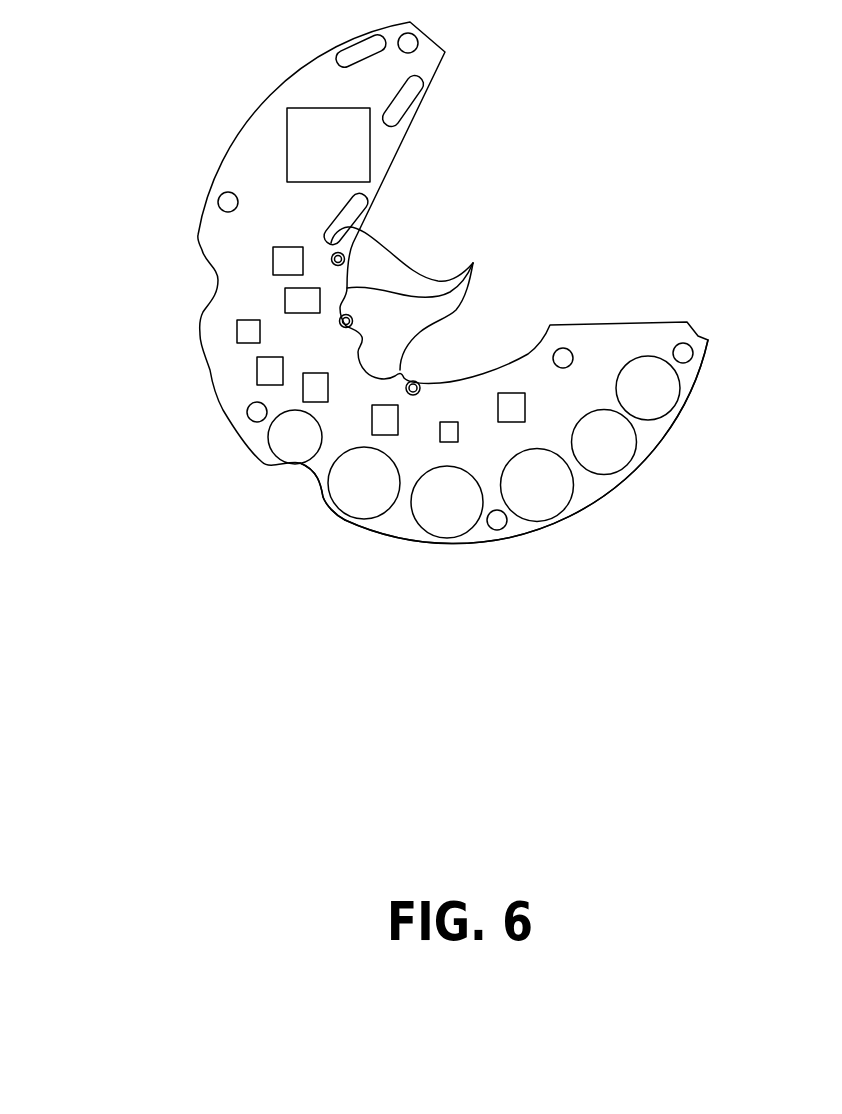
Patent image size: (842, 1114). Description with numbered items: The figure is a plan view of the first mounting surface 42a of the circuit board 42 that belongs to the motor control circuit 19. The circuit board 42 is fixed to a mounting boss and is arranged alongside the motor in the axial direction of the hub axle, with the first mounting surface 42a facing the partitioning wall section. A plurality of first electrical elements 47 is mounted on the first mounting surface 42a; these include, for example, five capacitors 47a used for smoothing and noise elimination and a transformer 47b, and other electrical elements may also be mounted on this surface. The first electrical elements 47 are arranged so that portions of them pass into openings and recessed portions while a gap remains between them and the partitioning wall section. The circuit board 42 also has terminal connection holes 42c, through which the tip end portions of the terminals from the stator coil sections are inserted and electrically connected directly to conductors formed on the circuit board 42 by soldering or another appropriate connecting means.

The motor control circuit 19 is at (322, 554).
The circuit board 42 is at (218, 353).
The first mounting surface 42a is at (253, 257).
The terminal connection holes 42c is at (422, 309).
The first electrical elements 47 is at (555, 539).
The capacitors 47a is at (362, 502).
The transformer 47b is at (283, 437).